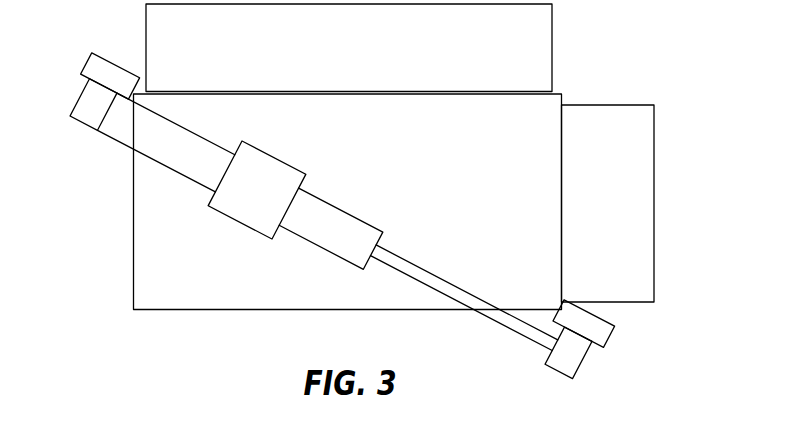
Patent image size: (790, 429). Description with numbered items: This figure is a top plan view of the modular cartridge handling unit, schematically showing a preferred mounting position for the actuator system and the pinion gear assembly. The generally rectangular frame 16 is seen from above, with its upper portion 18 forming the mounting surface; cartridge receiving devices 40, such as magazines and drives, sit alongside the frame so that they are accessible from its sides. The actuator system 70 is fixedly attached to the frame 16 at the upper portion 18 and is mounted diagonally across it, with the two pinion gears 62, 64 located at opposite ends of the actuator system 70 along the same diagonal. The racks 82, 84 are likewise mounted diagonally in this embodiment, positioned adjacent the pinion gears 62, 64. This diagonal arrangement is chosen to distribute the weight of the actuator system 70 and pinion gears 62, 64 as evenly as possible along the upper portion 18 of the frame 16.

The frame 16 is at (147, 235).
The upper portion 18 is at (446, 186).
The cartridge receiving devices 40 is at (566, 41).
The pinion gear 62 is at (87, 121).
The pinion gear 64 is at (578, 362).
The actuator system 70 is at (231, 244).
The rack 82 is at (96, 64).
The rack 84 is at (612, 337).